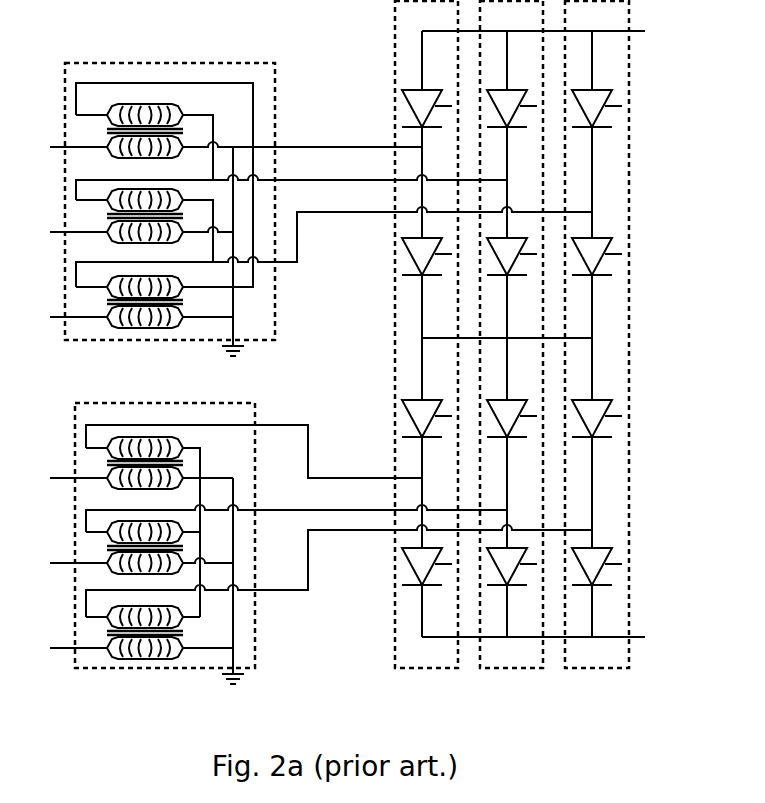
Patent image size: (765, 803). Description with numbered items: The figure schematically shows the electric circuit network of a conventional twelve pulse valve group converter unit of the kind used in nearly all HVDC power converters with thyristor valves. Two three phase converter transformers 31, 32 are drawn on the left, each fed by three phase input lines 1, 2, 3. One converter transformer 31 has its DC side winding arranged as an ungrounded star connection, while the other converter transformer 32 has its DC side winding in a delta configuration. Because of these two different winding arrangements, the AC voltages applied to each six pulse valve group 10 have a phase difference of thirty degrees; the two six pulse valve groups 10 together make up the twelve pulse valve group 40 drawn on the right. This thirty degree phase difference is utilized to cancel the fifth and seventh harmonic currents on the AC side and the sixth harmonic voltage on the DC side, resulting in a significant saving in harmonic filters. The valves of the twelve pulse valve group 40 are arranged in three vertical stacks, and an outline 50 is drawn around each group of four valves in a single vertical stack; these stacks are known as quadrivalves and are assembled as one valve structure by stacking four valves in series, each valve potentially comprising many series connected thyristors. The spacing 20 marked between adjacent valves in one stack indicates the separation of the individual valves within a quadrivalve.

The first phase input line 1 is at (45, 313).
The second phase input line 2 is at (45, 399).
The third phase input line 3 is at (45, 483).
The six pulse valve group 10 is at (645, 73).
The spacing between diodes 20 is at (605, 134).
The ungrounded star connection converter transformer 31 is at (165, 403).
The delta configuration converter transformer 32 is at (172, 63).
The twelve pulse valve group 40 is at (357, 46).
The outline 50 is at (597, 668).